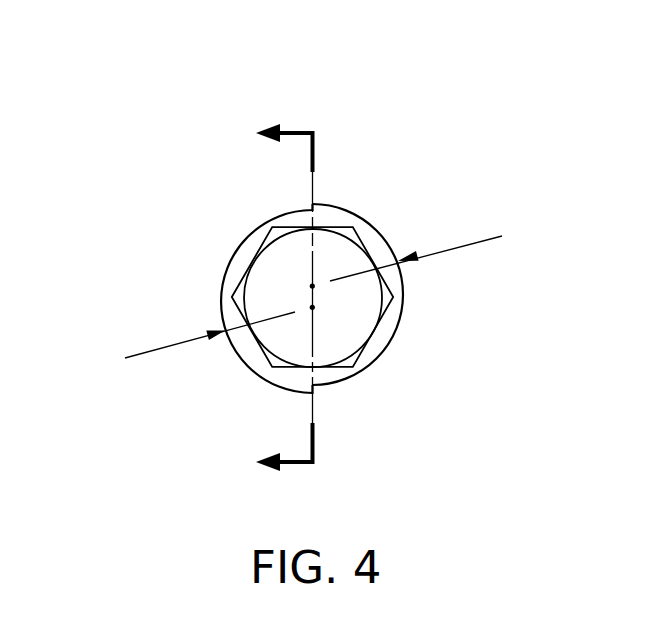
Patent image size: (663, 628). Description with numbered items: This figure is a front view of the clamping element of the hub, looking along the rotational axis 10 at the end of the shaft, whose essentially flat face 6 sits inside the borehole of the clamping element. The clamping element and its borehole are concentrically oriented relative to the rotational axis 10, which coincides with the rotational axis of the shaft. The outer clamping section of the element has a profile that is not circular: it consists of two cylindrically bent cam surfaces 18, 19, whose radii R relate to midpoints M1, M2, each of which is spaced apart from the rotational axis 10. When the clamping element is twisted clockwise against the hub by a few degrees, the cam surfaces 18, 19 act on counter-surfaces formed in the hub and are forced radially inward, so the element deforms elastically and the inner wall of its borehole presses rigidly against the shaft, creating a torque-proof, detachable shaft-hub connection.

The face 6 is at (264, 299).
The rotational axis 10 is at (312, 298).
The cam surface 18 is at (238, 358).
The cam surface 19 is at (405, 292).
The midpoint M1 is at (312, 286).
The midpoint M2 is at (312, 307).
The radius R is at (162, 347).